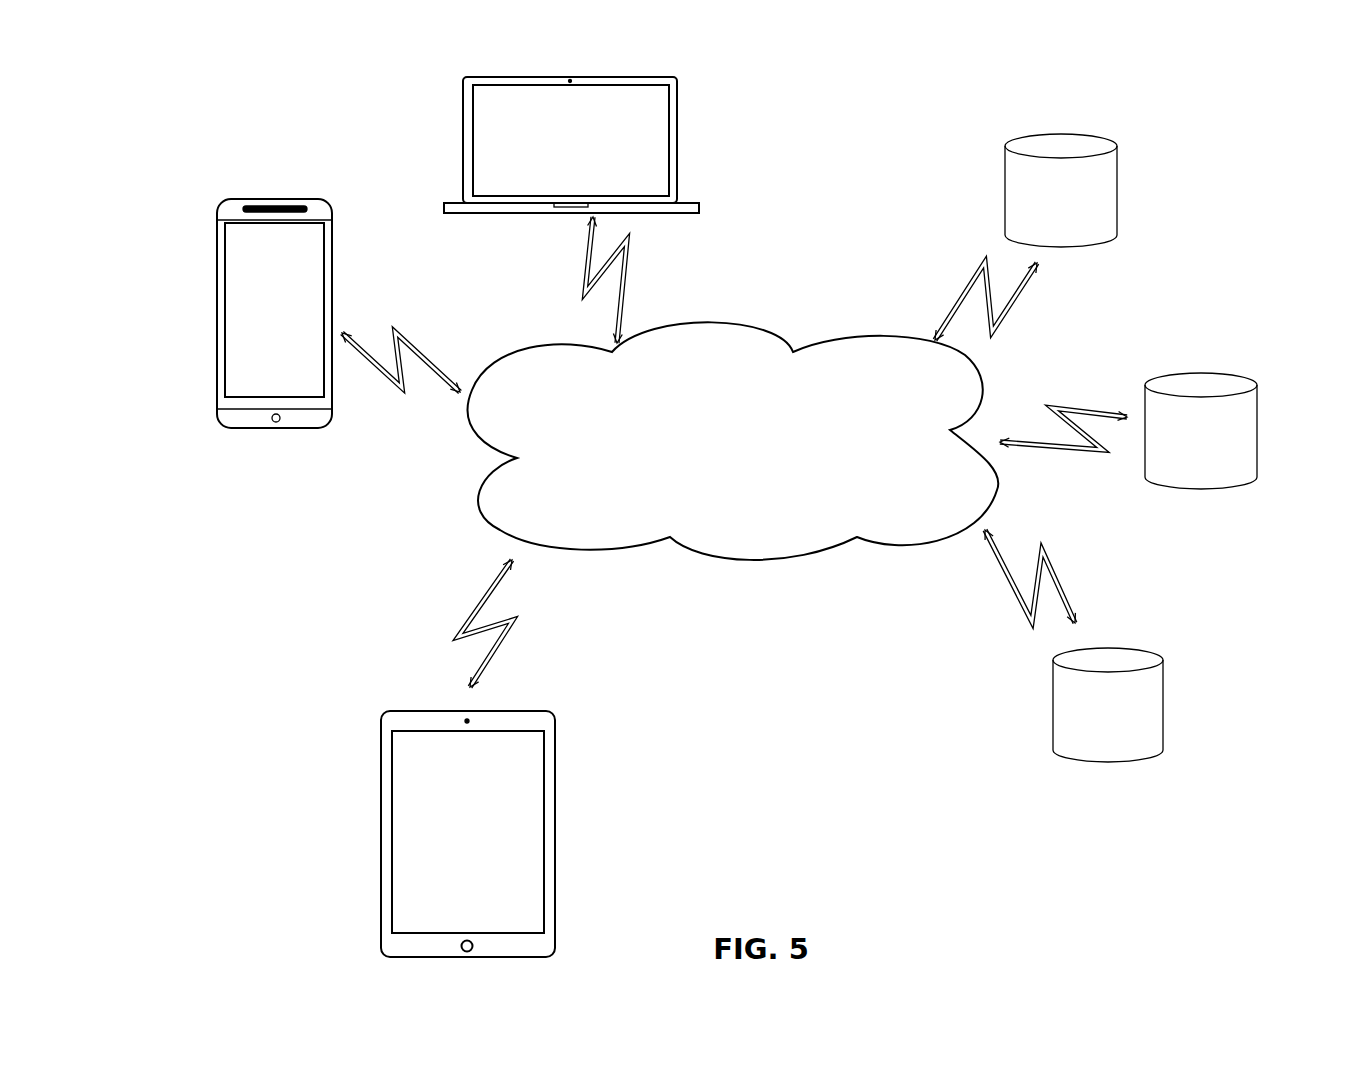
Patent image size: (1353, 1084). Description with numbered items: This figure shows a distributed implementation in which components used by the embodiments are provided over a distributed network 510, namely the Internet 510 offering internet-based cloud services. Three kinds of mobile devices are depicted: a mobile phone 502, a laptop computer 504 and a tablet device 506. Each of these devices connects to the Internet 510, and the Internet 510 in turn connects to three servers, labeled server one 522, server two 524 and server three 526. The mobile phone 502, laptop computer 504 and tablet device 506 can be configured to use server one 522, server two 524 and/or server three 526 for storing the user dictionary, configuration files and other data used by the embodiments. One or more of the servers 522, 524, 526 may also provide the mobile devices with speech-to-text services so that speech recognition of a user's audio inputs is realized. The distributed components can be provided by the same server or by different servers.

The mobile phone 502 is at (207, 290).
The laptop computer 504 is at (703, 157).
The tablet device 506 is at (375, 697).
The distributed network 510 is at (708, 473).
The server 1 522 is at (1130, 190).
The server 2 524 is at (1197, 358).
The server 3 526 is at (1171, 632).